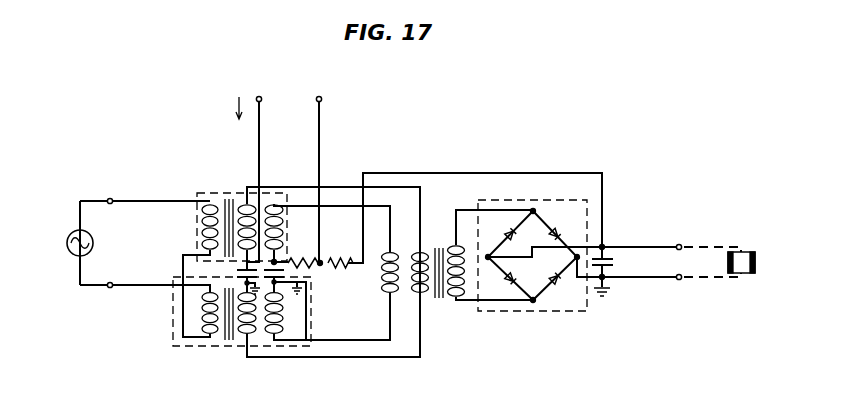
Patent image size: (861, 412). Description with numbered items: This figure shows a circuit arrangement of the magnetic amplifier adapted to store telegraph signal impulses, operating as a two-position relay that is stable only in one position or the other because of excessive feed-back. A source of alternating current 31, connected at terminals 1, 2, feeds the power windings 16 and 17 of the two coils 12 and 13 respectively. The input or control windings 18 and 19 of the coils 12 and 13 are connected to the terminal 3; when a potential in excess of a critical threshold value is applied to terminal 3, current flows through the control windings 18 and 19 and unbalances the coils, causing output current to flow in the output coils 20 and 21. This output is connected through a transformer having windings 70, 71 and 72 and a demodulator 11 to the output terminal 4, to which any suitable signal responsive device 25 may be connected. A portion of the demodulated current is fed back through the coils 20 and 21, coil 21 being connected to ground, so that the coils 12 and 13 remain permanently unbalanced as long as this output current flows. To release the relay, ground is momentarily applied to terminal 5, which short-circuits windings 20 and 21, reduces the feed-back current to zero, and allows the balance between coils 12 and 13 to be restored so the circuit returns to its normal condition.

The input terminal 1 is at (107, 297).
The input terminal 2 is at (112, 190).
The terminal 3 is at (259, 89).
The output terminal 4 is at (678, 252).
The terminal 5 is at (319, 89).
The demodulator 11 is at (552, 200).
The coil 12 is at (197, 194).
The coil 13 is at (173, 315).
The power winding 16 is at (224, 196).
The power winding 17 is at (217, 338).
The input or control winding 18 is at (238, 203).
The input or control winding 19 is at (249, 338).
The output coil 20 is at (285, 228).
The output coil 21 is at (280, 338).
The signal responsive device 25 is at (746, 252).
The source of alternating current 31 is at (67, 243).
The transformer winding 70 is at (427, 248).
The transformer winding 71 is at (383, 279).
The transformer winding 72 is at (458, 294).